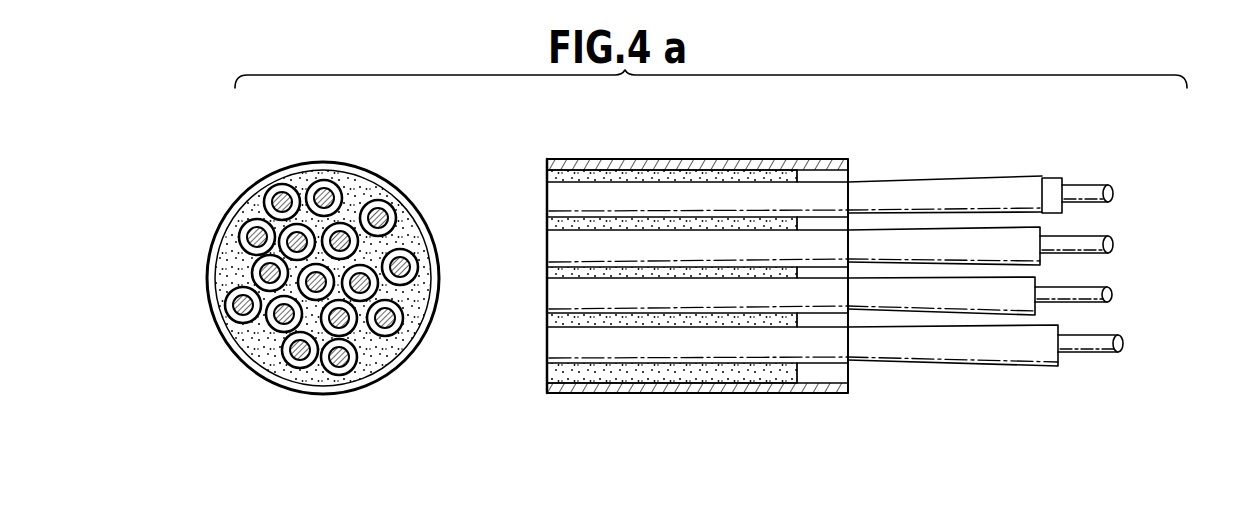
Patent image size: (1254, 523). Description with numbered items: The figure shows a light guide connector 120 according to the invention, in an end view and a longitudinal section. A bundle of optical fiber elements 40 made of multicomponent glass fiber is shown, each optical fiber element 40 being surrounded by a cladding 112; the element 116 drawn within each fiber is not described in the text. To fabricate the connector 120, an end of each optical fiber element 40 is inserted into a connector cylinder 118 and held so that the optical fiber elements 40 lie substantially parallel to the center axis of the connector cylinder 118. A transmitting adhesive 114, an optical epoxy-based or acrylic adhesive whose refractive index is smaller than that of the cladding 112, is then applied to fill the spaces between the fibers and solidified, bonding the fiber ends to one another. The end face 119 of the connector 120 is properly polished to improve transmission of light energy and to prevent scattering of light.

The optical fiber element 40 is at (973, 190).
The cladding 112 is at (325, 180).
The transmitting adhesive 114 is at (234, 267).
The wire 116 is at (245, 308).
The connector cylinder 118 is at (263, 180).
The end face 119 is at (541, 183).
The connector 120 is at (789, 146).